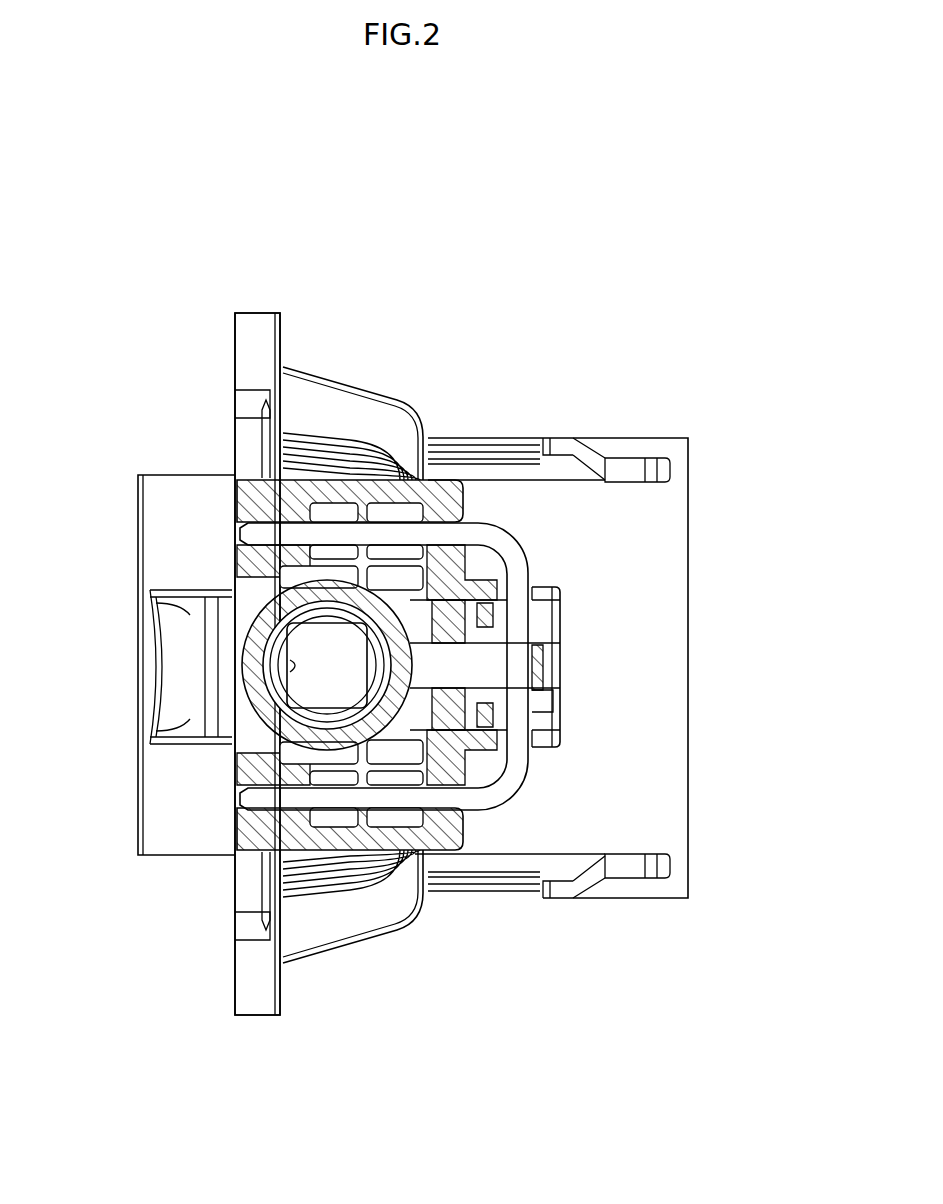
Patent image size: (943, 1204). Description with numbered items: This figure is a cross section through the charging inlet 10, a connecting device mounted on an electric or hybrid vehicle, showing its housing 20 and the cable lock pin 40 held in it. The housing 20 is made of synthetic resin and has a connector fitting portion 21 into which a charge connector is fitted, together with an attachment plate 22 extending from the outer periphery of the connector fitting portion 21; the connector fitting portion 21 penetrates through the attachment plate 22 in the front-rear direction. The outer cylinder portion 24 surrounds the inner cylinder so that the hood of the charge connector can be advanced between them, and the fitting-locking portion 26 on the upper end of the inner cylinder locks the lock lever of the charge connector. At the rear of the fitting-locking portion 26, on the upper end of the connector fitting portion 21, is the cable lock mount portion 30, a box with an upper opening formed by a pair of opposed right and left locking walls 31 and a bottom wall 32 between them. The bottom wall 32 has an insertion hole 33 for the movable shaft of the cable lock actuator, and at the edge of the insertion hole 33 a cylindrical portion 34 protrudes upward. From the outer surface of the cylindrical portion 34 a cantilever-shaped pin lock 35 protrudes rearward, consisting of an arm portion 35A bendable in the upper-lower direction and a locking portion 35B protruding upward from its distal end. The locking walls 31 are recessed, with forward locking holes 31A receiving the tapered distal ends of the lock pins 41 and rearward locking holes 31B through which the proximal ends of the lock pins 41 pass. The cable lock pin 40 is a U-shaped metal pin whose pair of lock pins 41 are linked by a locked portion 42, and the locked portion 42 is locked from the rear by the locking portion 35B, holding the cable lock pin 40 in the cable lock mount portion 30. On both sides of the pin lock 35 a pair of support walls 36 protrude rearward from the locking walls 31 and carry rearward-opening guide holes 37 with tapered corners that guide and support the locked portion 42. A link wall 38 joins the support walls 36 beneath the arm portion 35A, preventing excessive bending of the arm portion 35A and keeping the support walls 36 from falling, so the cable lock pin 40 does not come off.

The charging inlet 10 is at (415, 240).
The housing 20 is at (620, 362).
The connector fitting portion 21 is at (668, 440).
The attachment plate 22 is at (257, 312).
The outer cylinder portion 24 is at (153, 528).
The fitting-locking portion 26 is at (188, 668).
The cable lock mount portion 30 is at (208, 510).
The locking walls 31 is at (368, 490).
The forward locking holes 31A is at (283, 523).
The rearward locking holes 31B is at (452, 523).
The bottom wall 32 is at (250, 724).
The insertion hole 33 is at (318, 700).
The cylindrical portion 34 is at (258, 598).
The pin lock 35 is at (750, 600).
The arm portion 35A is at (484, 666).
The locking portion 35B is at (537, 673).
The support walls 36 is at (540, 590).
The guide holes 37 is at (545, 610).
The link wall 38 is at (547, 698).
The cable lock pin 40 is at (532, 540).
The lock pins 41 is at (408, 533).
The locked portion 42 is at (515, 718).